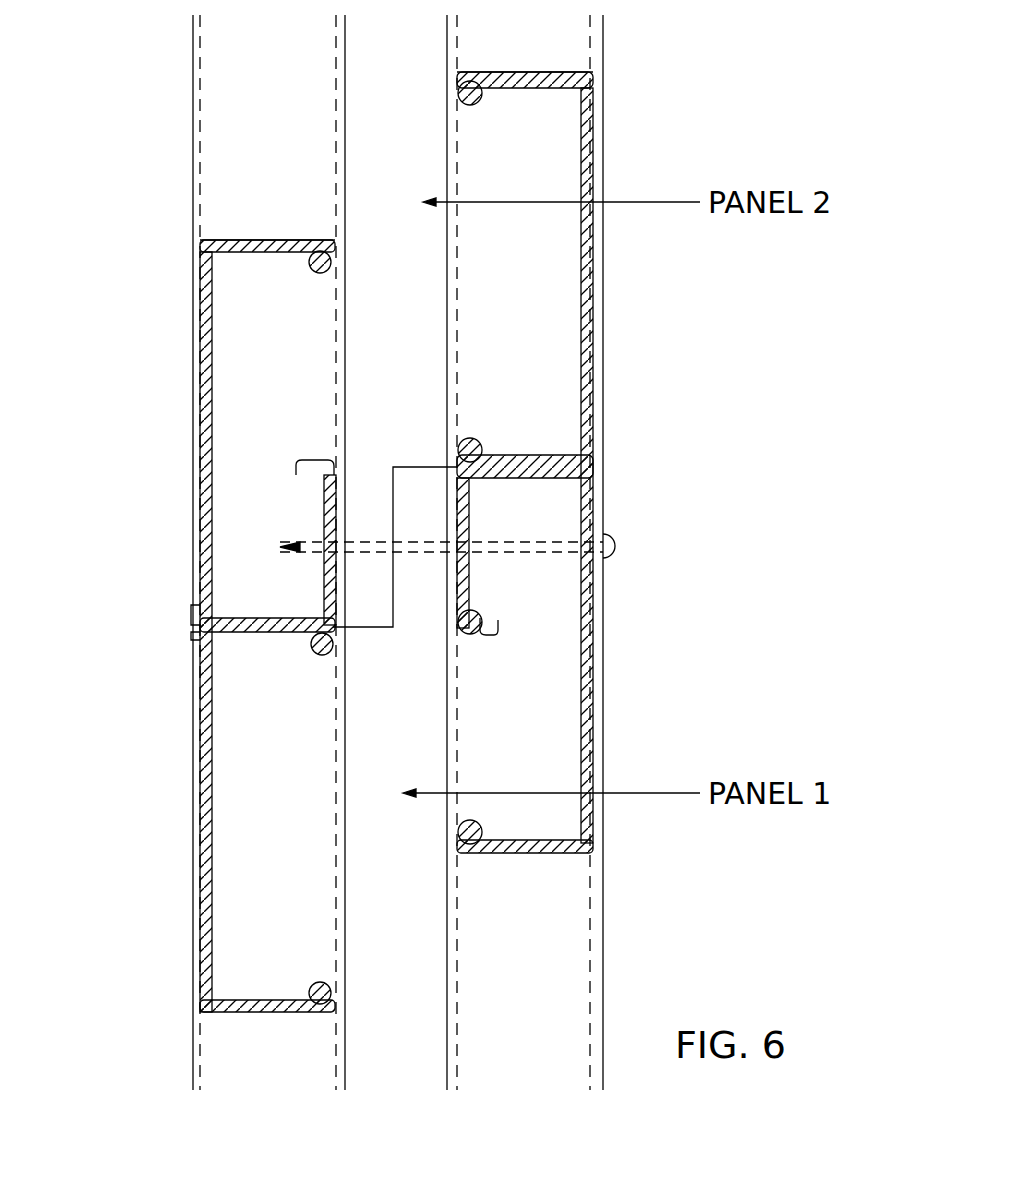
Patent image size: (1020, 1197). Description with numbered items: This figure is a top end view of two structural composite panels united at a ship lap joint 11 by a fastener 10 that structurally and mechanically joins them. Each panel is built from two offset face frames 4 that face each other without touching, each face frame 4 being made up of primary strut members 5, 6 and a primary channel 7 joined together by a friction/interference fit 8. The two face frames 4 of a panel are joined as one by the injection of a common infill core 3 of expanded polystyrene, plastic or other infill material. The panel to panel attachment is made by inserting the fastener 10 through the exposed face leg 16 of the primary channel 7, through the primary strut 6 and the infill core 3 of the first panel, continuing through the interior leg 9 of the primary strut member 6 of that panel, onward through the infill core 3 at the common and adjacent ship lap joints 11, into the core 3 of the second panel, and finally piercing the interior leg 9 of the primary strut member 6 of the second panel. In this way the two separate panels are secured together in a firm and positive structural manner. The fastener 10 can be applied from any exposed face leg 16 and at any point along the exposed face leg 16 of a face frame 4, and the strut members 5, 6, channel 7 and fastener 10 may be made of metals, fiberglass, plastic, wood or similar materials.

The infill core 3 is at (540, 346).
The face frame 4 is at (200, 271).
The primary strut member 5 is at (200, 724).
The primary strut member 6 is at (200, 427).
The primary channel 7 is at (193, 95).
The friction/interference fit 8 is at (318, 264).
The interior leg 9 is at (325, 533).
The fastener 10 is at (615, 549).
The ship lap joint 11 is at (393, 578).
The exposed face leg 16 is at (396, 156).